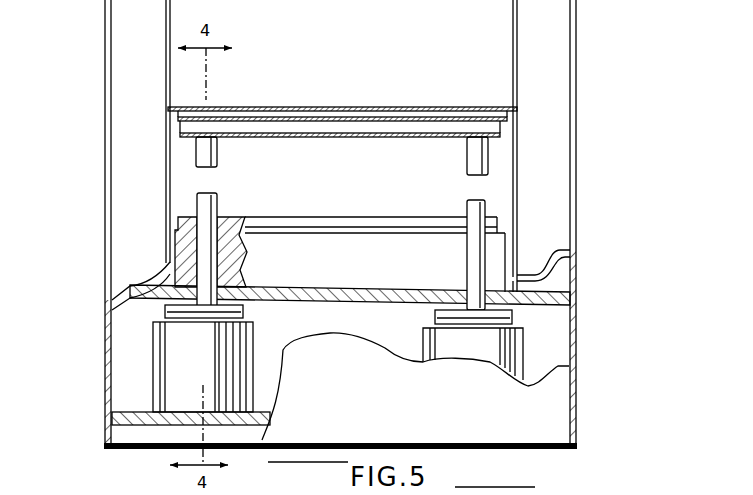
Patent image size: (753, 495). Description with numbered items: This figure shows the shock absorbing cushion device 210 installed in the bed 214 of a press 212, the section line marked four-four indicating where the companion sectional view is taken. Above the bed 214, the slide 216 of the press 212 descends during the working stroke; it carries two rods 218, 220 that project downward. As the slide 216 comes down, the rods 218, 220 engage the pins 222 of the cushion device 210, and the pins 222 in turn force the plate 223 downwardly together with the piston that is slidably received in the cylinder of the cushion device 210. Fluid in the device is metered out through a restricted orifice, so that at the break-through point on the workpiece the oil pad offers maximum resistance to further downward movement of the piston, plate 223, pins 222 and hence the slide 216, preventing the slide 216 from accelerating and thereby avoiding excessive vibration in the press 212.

The cushion device 210 is at (152, 366).
The press 212 is at (576, 85).
The bed 214 is at (338, 312).
The slide 216 is at (381, 42).
The rod 218 is at (217, 157).
The rod 220 is at (465, 159).
The pins 222 is at (219, 203).
The plate 223 is at (243, 312).